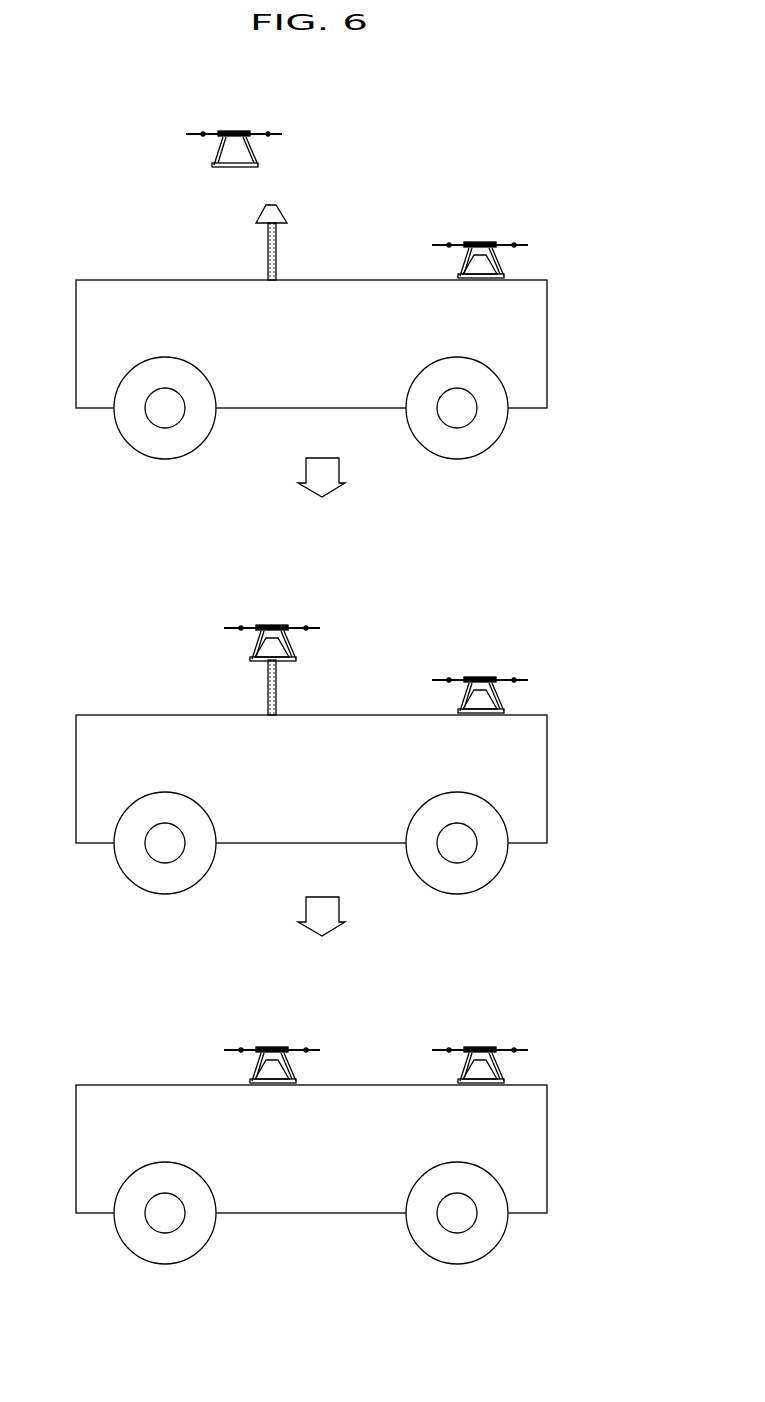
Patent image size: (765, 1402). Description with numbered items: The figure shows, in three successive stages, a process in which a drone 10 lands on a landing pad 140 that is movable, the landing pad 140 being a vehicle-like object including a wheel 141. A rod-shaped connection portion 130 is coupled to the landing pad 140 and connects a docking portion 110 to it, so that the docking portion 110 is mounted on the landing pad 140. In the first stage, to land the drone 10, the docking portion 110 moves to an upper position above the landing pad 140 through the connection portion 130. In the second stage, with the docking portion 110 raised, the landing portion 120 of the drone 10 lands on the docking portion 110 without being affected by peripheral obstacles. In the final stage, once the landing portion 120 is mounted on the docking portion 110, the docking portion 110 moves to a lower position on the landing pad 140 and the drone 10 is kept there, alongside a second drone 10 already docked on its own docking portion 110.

The drone 10 is at (241, 130).
The docking portion 110 is at (275, 215).
The landing portion 120 is at (246, 154).
The connection portion 130 is at (268, 262).
The landing pad 140 is at (562, 325).
The wheel 141 is at (492, 430).